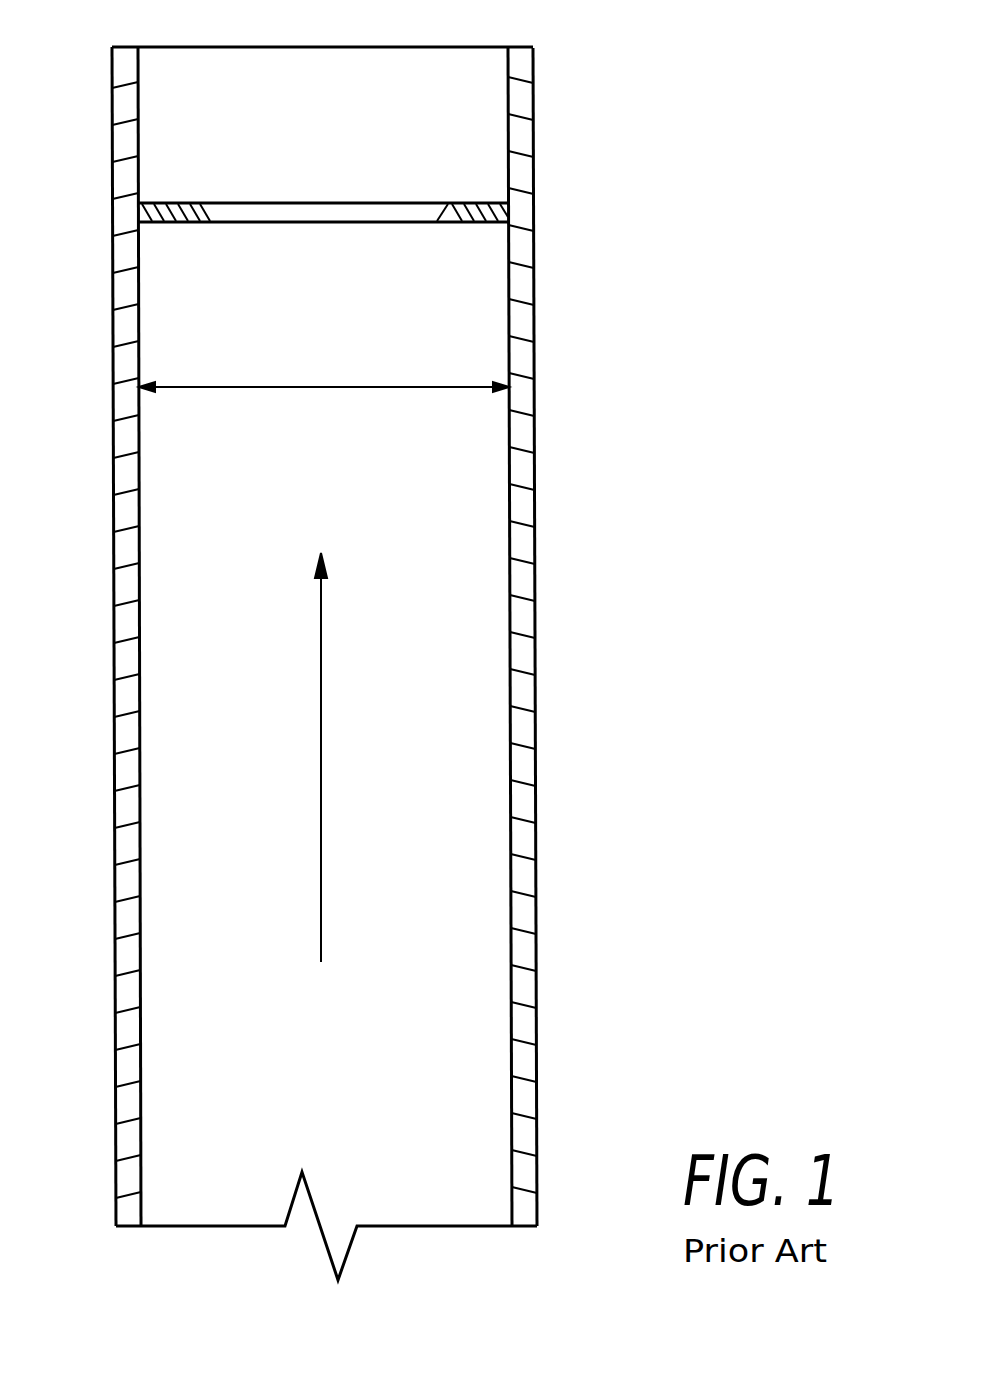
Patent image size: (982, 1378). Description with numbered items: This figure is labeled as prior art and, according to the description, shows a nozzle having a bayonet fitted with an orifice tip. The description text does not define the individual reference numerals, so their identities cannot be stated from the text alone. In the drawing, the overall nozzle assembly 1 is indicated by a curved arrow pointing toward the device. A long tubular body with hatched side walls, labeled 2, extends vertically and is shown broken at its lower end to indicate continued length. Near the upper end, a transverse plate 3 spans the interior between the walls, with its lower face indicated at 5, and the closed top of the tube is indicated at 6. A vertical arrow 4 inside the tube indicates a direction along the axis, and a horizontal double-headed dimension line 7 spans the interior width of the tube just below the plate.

The prior art container assembly 1 is at (409, 640).
The tubular wall 2 is at (114, 640).
The plate 3 is at (323, 214).
The flow direction arrow 4 is at (321, 757).
The lower surface of plate 5 is at (338, 223).
The closed top end 6 is at (322, 47).
The inner diameter 7 is at (300, 388).